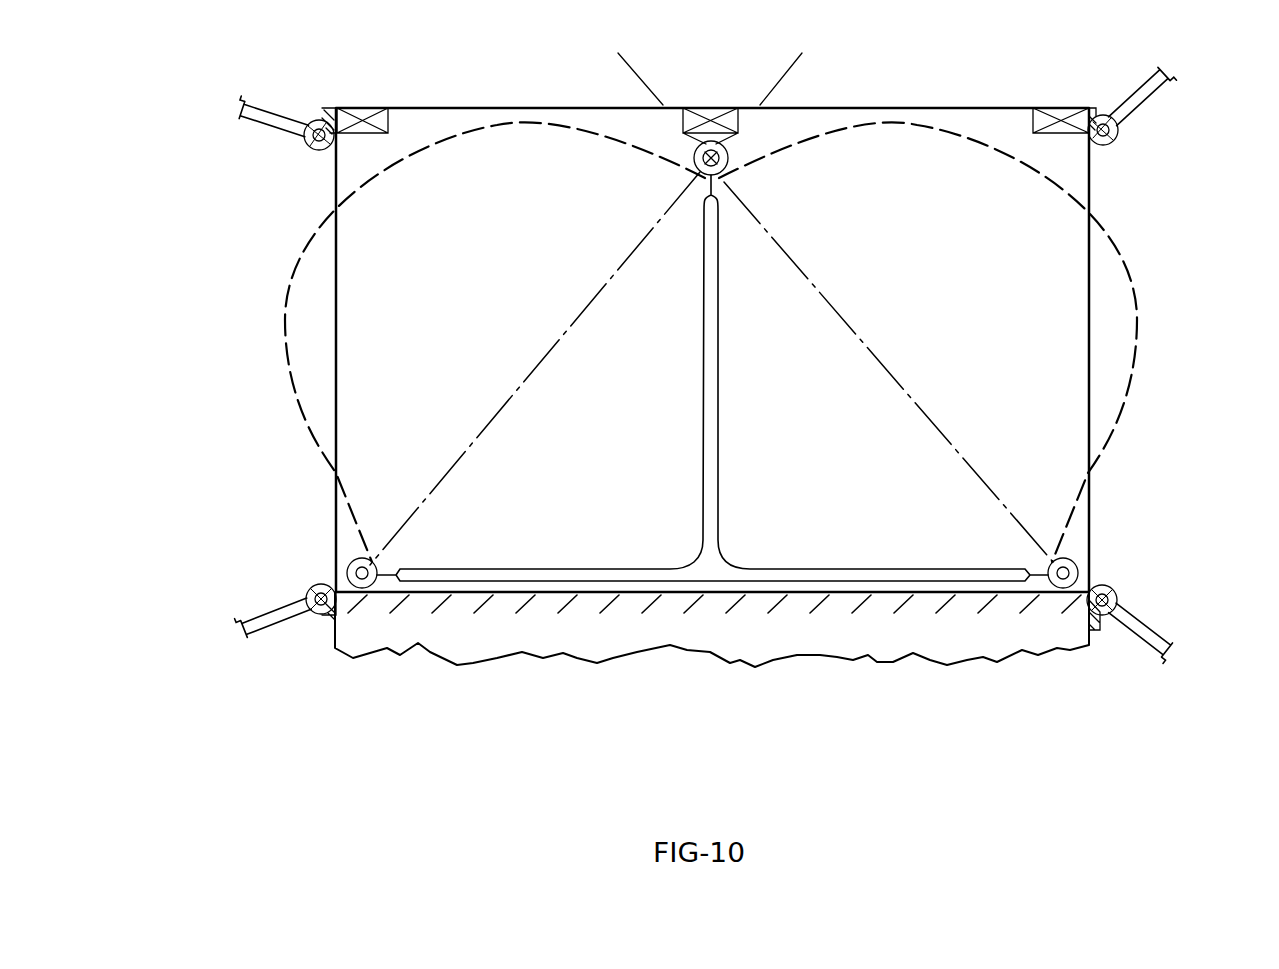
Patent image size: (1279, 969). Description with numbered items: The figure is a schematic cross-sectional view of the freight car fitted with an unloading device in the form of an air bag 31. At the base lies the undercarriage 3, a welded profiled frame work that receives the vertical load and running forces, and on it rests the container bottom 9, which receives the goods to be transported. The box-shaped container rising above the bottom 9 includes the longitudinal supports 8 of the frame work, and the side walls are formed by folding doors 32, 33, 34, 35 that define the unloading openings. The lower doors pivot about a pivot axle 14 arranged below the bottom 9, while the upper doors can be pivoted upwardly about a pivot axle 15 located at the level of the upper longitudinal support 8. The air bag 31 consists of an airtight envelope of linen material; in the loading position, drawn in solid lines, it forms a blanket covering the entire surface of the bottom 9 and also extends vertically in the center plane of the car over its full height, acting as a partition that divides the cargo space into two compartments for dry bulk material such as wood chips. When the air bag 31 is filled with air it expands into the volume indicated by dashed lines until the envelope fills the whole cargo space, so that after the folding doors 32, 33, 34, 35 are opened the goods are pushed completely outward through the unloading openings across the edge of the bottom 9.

The undercarriage 3 is at (1060, 638).
The longitudinal supports 8 is at (362, 110).
The container bottom 9 is at (933, 593).
The pivot axle 14 is at (312, 590).
The pivot axle 15 is at (313, 143).
The air bag 31 is at (292, 358).
The folding door 32 is at (1142, 98).
The folding door 33 is at (1148, 637).
The folding door 34 is at (270, 125).
The folding door 35 is at (278, 620).